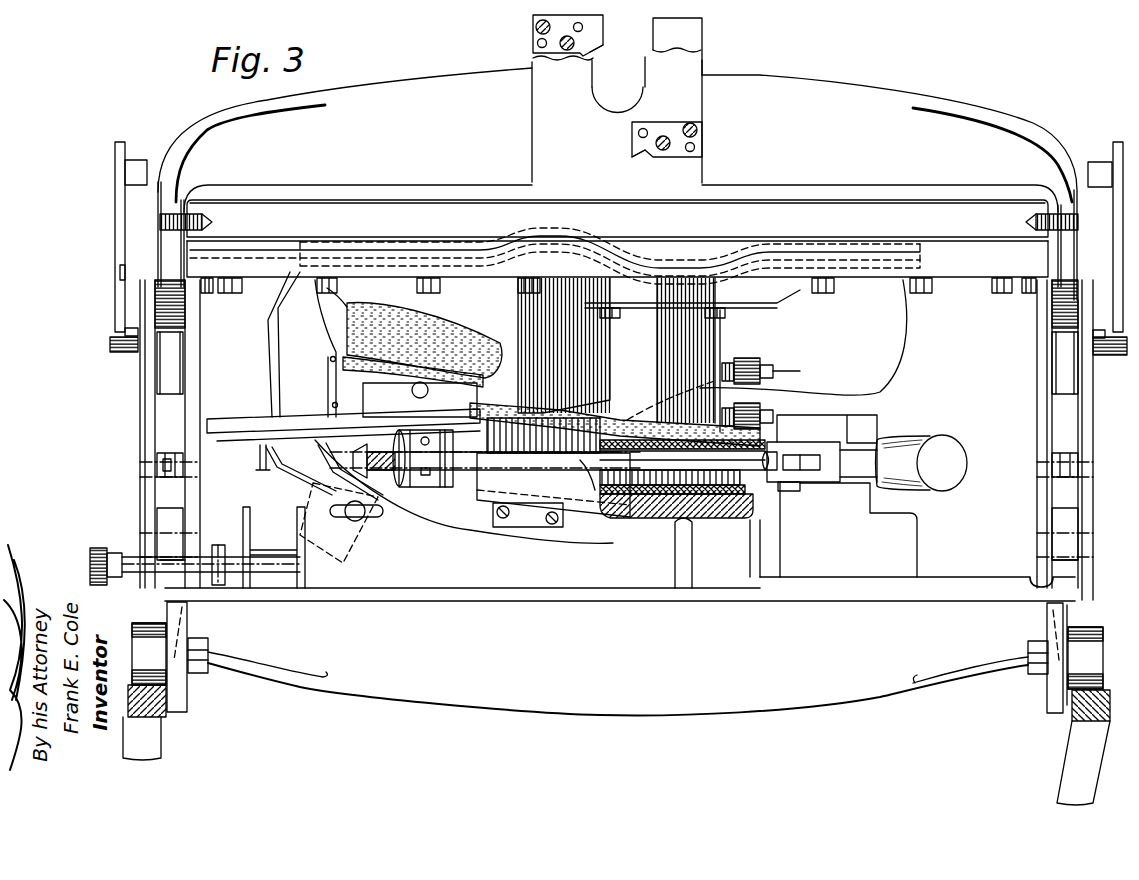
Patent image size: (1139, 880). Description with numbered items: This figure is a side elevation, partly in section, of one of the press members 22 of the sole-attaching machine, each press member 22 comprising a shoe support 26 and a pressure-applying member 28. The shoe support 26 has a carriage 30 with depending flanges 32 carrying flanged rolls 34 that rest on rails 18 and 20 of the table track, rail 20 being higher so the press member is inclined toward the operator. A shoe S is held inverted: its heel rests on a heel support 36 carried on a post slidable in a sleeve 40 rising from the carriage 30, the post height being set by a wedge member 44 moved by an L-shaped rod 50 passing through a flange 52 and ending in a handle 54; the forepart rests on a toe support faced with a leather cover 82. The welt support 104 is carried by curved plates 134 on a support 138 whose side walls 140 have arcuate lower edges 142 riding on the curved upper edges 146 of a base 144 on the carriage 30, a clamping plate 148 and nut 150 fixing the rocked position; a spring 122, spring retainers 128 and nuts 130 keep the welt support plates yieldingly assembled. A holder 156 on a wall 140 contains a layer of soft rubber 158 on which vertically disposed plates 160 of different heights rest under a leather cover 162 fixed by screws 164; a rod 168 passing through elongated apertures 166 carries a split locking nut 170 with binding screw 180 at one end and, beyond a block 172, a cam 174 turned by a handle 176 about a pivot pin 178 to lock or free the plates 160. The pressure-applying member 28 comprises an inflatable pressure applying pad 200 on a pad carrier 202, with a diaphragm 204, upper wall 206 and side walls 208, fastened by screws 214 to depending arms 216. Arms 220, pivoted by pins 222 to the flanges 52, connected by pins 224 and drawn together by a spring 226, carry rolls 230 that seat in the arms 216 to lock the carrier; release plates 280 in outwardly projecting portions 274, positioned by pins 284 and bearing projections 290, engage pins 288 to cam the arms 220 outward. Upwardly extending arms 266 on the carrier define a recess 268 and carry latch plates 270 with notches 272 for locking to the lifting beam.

The rail 18 is at (167, 715).
The rail 20 is at (1070, 713).
The press member 22 is at (91, 471).
The shoe support 26 is at (430, 721).
The pressure-applying member 28 is at (861, 74).
The carriage 30 is at (543, 695).
The depending flanges 32 is at (182, 697).
The flanged rolls 34 is at (152, 640).
The heel support 36 is at (857, 430).
The sleeve 40 is at (848, 567).
The wedge member 44 is at (903, 527).
The L-shaped rod 50 is at (233, 565).
The flange 52 is at (165, 575).
The handle 54 is at (97, 560).
The leather cover 82 is at (343, 330).
The welt support 104 is at (261, 362).
The spring 122 is at (723, 367).
The spring retainers 128 is at (742, 360).
The nuts 130 is at (762, 368).
The curved plates 134 is at (273, 427).
The support 138 is at (257, 459).
The side walls 140 is at (288, 450).
The arcuate lower edges 142 is at (273, 473).
The base 144 is at (390, 578).
The curved upper edges 146 is at (470, 530).
The clamping plate 148 is at (293, 538).
The nut 150 is at (347, 521).
The holder 156 is at (743, 520).
The layer of soft rubber 158 is at (707, 497).
The vertically disposed plates 160 is at (510, 443).
The leather cover 162 is at (560, 443).
The screws 164 is at (480, 404).
The elongated apertures 166 is at (657, 520).
The rod 168 is at (645, 460).
The split locking nut 170 is at (438, 497).
The block 172 is at (765, 445).
The cam 174 is at (775, 447).
The handle 176 is at (902, 453).
The pivot pin 178 is at (783, 492).
The binding screw 180 is at (420, 487).
The inflatable pressure applying pad 200 is at (555, 255).
The pad carrier 202 is at (370, 100).
The diaphragm 204 is at (497, 243).
The upper wall 206 is at (842, 202).
The side walls 208 is at (933, 212).
The screws 214 is at (165, 212).
The depending arms 216 is at (168, 258).
The arms 220 is at (192, 393).
The pins 222 is at (170, 527).
The pins 224 is at (163, 473).
The spring 226 is at (167, 458).
The rolls 230 is at (163, 332).
The upwardly extending arms 266 is at (543, 70).
The recess 268 is at (620, 82).
The latch plates 270 is at (533, 35).
The notches 272 is at (597, 55).
The outwardly projecting portions 274 is at (137, 200).
The release plates 280 is at (118, 285).
The pins 284 is at (125, 333).
The pins 288 is at (113, 347).
The upwardly extending projections 290 is at (125, 140).
The shoe S is at (895, 317).